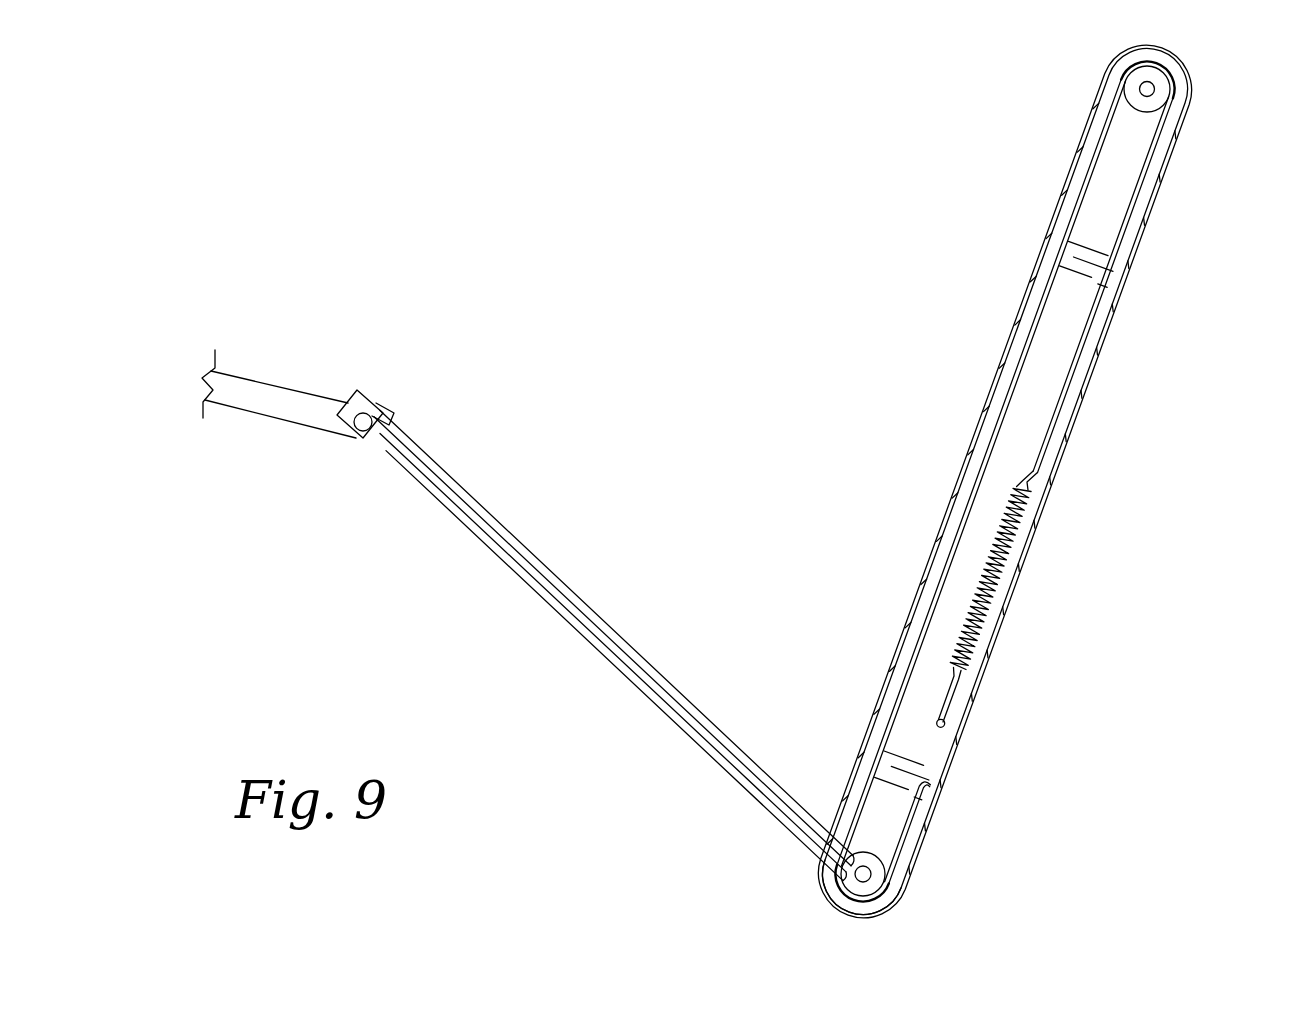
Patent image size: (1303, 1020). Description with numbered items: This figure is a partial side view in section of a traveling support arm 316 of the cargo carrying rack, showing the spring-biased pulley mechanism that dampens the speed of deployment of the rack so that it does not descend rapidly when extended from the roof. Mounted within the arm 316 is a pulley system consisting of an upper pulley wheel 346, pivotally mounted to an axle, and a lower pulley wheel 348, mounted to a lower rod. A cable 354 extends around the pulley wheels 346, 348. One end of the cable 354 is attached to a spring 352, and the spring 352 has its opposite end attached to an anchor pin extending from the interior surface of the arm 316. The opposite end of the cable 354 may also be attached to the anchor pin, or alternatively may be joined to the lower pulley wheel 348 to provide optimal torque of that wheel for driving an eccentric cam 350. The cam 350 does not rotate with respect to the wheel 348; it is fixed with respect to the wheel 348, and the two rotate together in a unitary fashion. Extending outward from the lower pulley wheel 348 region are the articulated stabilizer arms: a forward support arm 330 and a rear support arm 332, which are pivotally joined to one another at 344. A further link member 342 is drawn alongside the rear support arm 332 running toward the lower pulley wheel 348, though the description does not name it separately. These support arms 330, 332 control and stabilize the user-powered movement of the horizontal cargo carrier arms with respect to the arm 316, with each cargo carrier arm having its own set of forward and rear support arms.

The arm 316 is at (1176, 147).
The forward support arm 330 is at (283, 398).
The rear support arm 332 is at (683, 693).
The upper link rod 342 is at (526, 564).
The pivot joint 344 is at (376, 412).
The upper pulley wheel 346 is at (1163, 92).
The lower pulley wheel 348 is at (879, 881).
The eccentric cam 350 is at (841, 893).
The spring 352 is at (998, 620).
The cable 354 is at (1108, 265).